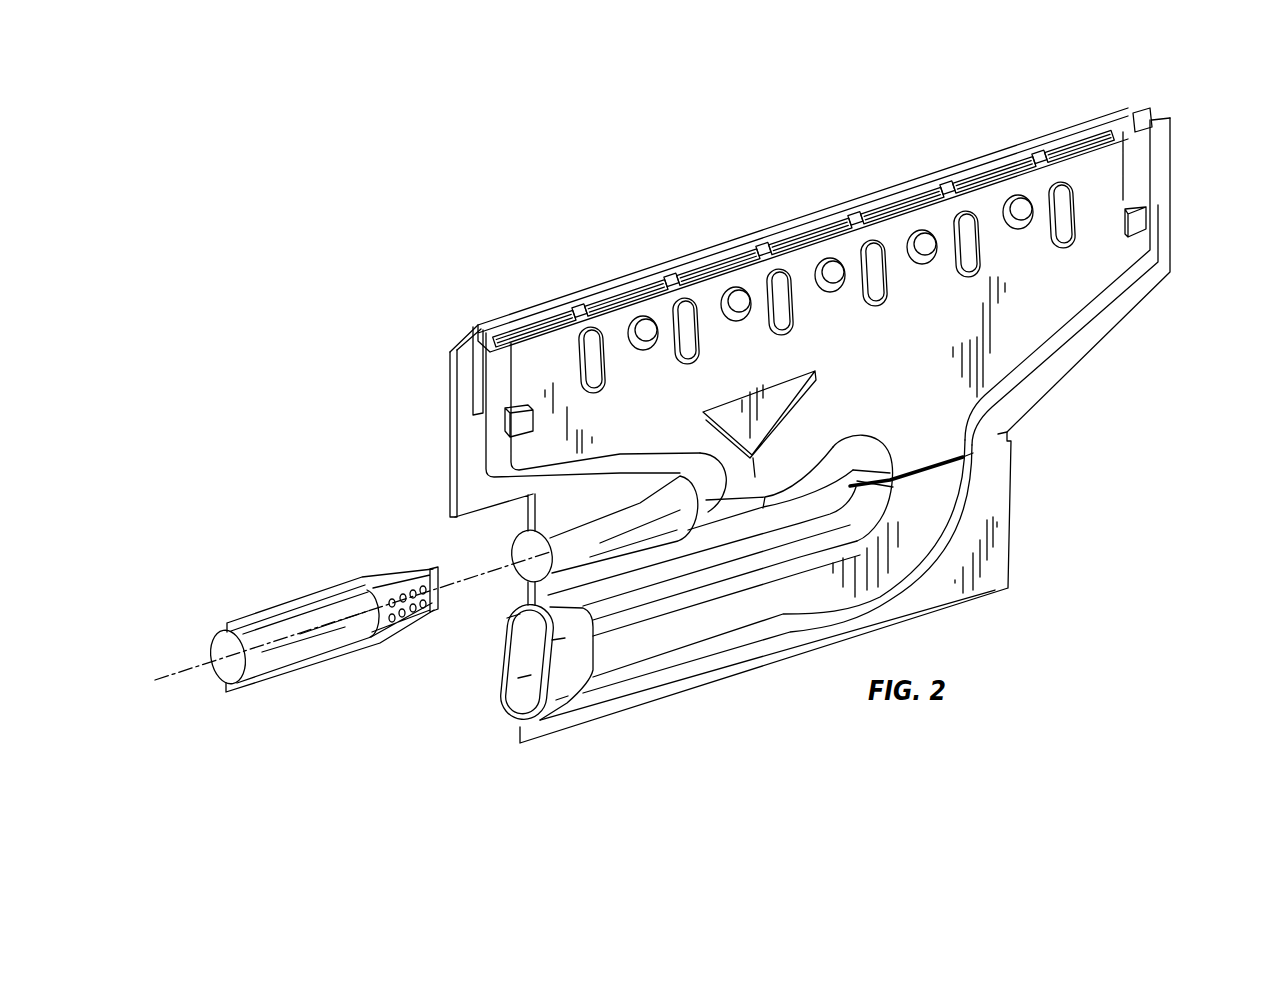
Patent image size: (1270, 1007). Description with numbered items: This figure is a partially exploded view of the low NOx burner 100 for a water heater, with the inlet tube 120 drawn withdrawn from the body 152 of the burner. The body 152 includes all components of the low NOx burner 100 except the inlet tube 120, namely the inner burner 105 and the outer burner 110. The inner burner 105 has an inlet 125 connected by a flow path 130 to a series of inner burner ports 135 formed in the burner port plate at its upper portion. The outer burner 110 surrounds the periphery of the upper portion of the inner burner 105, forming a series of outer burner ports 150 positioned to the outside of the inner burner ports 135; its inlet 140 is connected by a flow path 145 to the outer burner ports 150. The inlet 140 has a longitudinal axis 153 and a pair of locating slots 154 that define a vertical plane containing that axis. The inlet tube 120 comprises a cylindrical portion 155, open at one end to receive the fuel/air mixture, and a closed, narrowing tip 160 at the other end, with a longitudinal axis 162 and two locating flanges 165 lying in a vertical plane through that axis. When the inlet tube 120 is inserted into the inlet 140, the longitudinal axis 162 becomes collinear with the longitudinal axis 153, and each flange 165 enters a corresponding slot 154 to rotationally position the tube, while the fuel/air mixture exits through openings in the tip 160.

The low NOx burner 100 is at (1188, 106).
The inner burner 105 is at (960, 545).
The outer burner 110 is at (1073, 277).
The inlet tube 120 is at (293, 623).
The inlet 125 is at (632, 650).
The flow path 130 is at (925, 437).
The inner burner ports 135 is at (548, 322).
The inlet 140 is at (614, 525).
The flow path 145 is at (808, 397).
The outer burner ports 150 is at (512, 324).
The body 152 is at (421, 395).
The longitudinal axis 153 is at (478, 572).
The locating slots 154 is at (530, 532).
The cylindrical portion 155 is at (280, 654).
The tip 160 is at (434, 603).
The longitudinal axis 162 is at (198, 663).
The locating flanges 165 is at (335, 598).